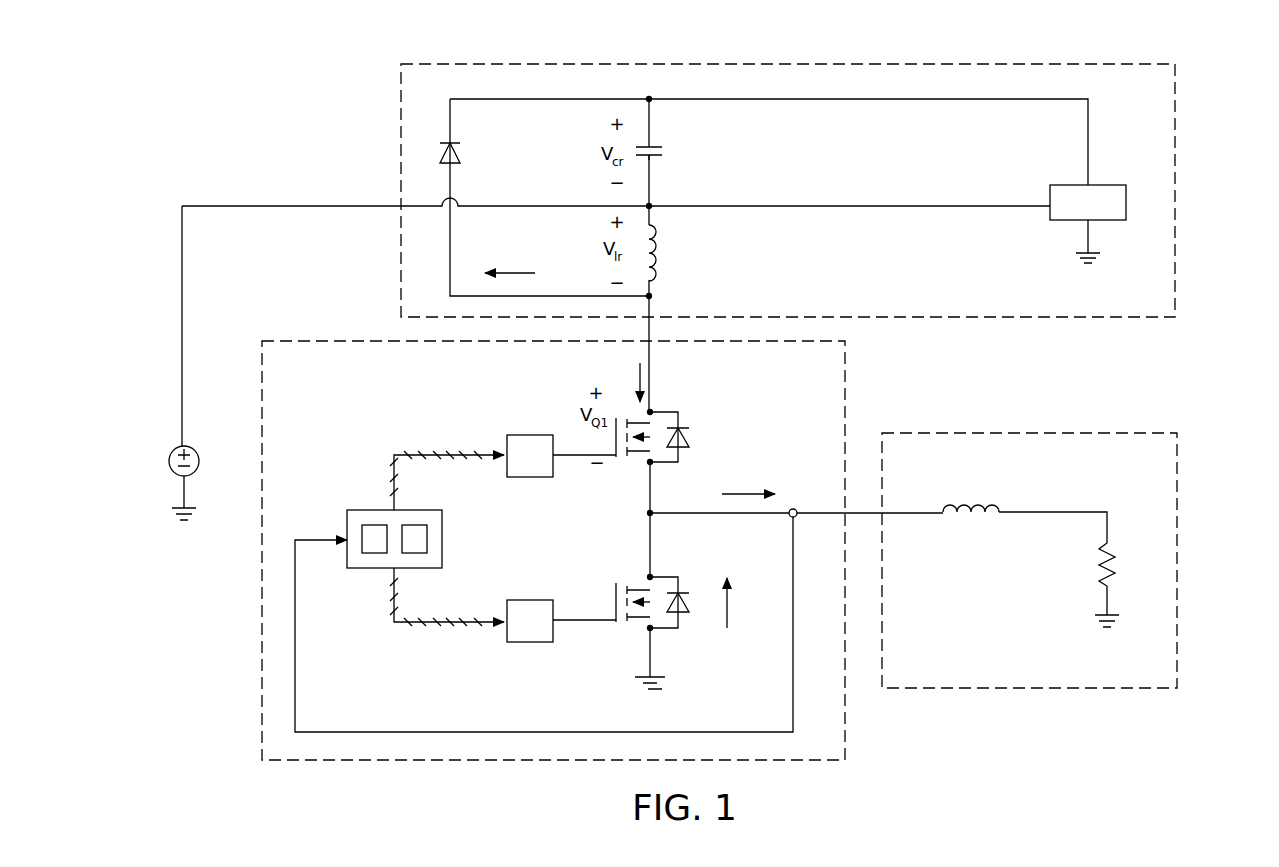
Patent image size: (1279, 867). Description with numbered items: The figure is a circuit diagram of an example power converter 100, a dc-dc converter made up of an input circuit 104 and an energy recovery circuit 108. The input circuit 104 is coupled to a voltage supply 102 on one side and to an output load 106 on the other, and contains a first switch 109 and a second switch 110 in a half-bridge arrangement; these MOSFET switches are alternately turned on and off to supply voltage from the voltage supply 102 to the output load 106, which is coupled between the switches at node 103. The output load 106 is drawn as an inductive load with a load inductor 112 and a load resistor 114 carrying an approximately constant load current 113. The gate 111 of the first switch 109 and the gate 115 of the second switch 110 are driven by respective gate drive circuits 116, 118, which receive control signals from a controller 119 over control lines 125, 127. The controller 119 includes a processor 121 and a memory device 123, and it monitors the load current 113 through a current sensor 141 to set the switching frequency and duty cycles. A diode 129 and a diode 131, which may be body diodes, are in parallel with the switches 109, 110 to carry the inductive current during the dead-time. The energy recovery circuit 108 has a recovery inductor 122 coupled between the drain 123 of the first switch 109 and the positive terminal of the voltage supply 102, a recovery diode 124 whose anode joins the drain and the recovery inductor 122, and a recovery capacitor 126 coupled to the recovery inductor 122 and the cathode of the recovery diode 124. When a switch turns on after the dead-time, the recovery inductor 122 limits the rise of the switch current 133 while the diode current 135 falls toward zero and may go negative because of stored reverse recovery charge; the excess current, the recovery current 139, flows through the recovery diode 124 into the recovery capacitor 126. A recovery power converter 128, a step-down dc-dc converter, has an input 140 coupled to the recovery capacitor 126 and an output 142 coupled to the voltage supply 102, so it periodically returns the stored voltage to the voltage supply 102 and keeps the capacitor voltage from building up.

The power converter 100 is at (255, 125).
The voltage supply 102 is at (172, 450).
The node 103 is at (652, 516).
The input circuit 104 is at (262, 660).
The output load 106 is at (1177, 500).
The energy recovery circuit 108 is at (1177, 178).
The first switch 109 is at (615, 462).
The second switch 110 is at (617, 627).
The gate 111 is at (612, 453).
The load inductor 112 is at (962, 527).
The load current 113 is at (745, 494).
The load resistor 114 is at (1088, 571).
The gate 115 is at (612, 606).
The gate drive circuit 116 is at (530, 435).
The gate drive circuit 118 is at (522, 642).
The controller 119 is at (360, 510).
The processor 121 is at (368, 553).
The recovery inductor 122 is at (668, 268).
The memory device 123 is at (650, 383).
The recovery diode 124 is at (433, 146).
The control line 125 is at (425, 452).
The recovery capacitor 126 is at (661, 137).
The control line 127 is at (432, 627).
The recovery power converter 128 is at (1058, 185).
The diode 129 is at (707, 415).
The diode 131 is at (692, 623).
The switch current 133 is at (640, 366).
The diode current 135 is at (732, 586).
The recovery current 139 is at (508, 273).
The input 140 is at (1110, 182).
The current sensor 141 is at (795, 508).
The output 142 is at (1045, 210).